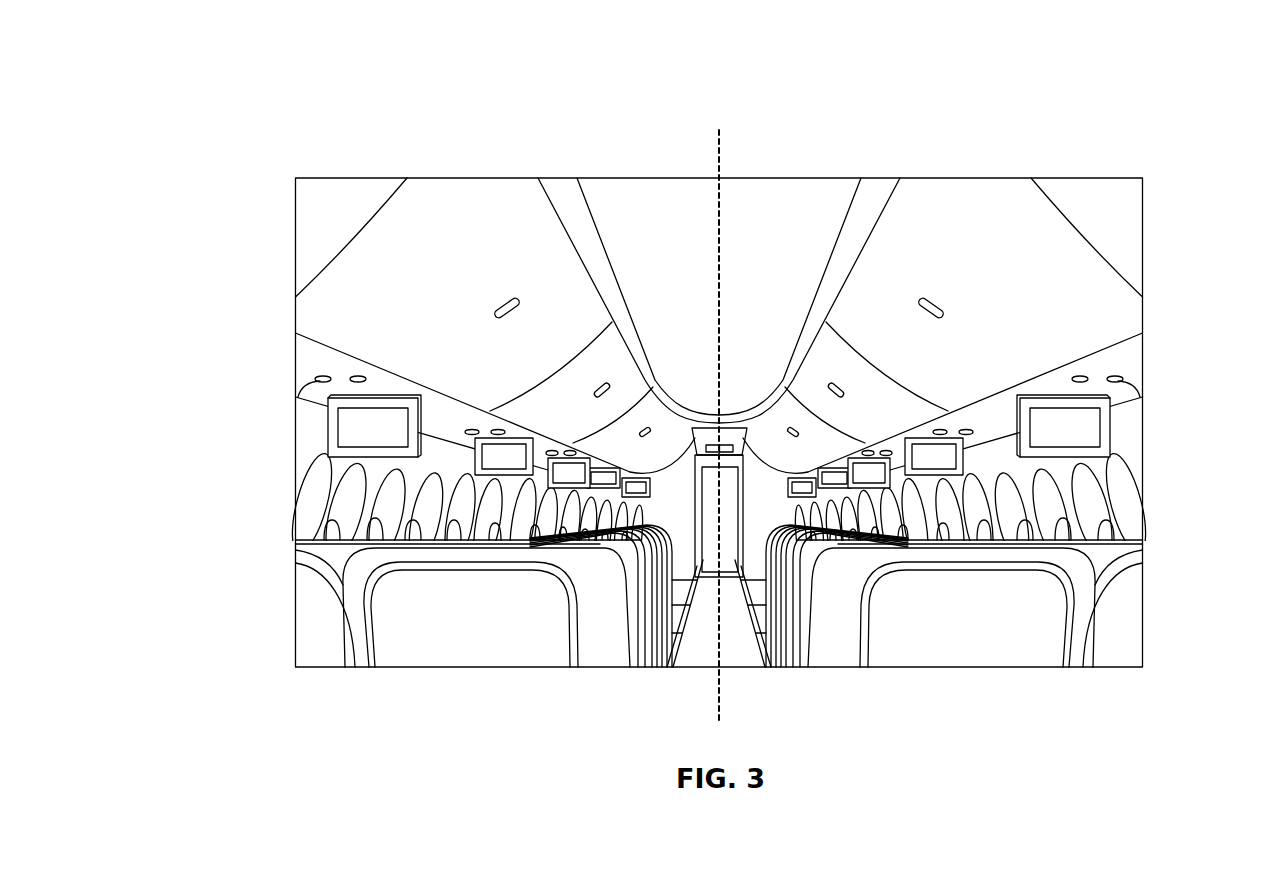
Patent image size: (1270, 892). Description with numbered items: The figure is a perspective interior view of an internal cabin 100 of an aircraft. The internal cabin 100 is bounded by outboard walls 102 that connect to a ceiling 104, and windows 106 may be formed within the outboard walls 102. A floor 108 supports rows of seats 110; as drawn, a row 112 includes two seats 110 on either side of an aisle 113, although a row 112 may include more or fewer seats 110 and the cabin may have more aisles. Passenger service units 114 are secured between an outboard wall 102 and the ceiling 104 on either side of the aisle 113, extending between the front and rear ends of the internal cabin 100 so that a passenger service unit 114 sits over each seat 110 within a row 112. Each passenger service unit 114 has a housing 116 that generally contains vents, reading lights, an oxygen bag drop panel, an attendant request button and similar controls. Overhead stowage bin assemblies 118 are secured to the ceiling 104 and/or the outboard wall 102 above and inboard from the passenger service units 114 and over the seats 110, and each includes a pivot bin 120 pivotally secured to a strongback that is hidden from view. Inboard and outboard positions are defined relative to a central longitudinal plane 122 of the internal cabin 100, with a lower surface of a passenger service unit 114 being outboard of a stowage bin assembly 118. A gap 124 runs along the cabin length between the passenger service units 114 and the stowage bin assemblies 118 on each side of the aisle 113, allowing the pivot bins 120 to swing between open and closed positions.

The internal cabin 100 is at (243, 135).
The outboard walls 102 is at (300, 431).
The ceiling 104 is at (777, 178).
The windows 106 is at (318, 519).
The floor 108 is at (712, 650).
The seats 110 is at (463, 655).
The row 112 is at (300, 628).
The aisle 113 is at (743, 650).
The passenger service units 114 is at (296, 397).
The housing 116 is at (303, 369).
The overhead stowage bin assemblies 118 is at (402, 233).
The pivot bin 120 is at (468, 195).
The central longitudinal plane 122 is at (718, 152).
The gap 124 is at (296, 333).